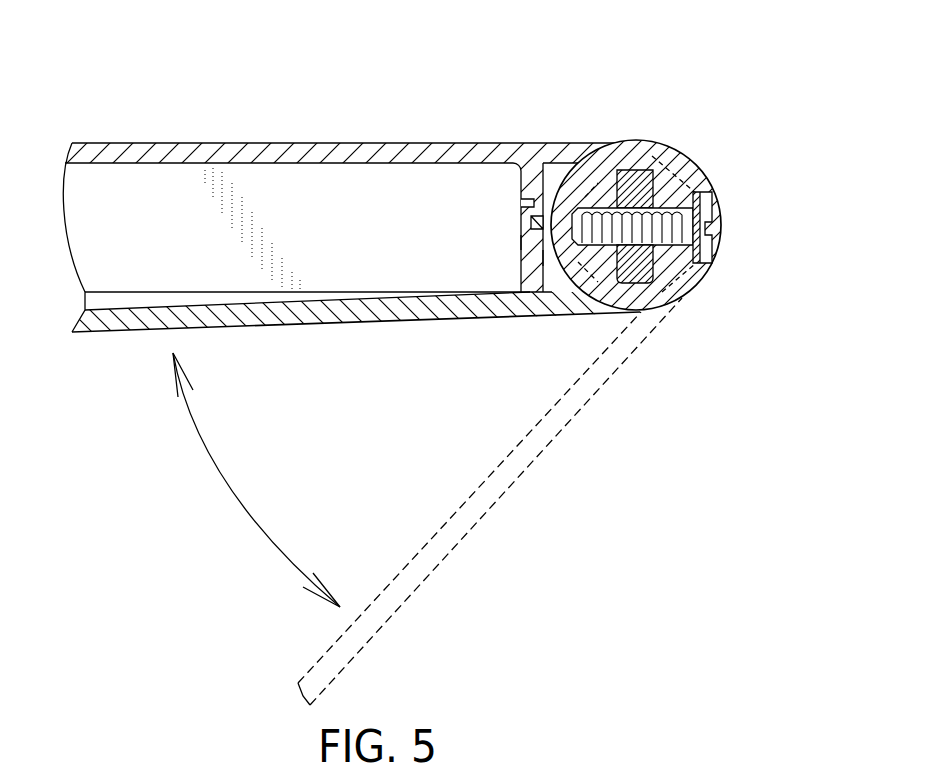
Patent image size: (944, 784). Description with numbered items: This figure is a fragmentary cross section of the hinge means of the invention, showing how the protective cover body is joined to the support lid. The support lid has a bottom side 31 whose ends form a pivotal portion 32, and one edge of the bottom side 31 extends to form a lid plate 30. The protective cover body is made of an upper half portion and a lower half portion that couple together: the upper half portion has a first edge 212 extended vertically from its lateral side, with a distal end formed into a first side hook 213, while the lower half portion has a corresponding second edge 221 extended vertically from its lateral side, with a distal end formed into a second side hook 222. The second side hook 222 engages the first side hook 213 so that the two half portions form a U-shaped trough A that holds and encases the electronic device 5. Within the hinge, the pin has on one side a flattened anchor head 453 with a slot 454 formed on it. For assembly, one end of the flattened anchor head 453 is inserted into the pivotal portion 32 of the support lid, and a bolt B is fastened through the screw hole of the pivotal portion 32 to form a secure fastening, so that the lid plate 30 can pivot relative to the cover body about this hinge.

The electronic device 5 is at (327, 188).
The lid plate 30 is at (137, 322).
The bottom side 31 is at (618, 157).
The pivotal portion 32 is at (707, 292).
The first edge 212 is at (537, 185).
The first side hook 213 is at (521, 225).
The second edge 221 is at (541, 258).
The second side hook 222 is at (520, 208).
The flattened anchor head 453 is at (636, 278).
The slot 454 is at (651, 250).
The U-shaped trough A is at (520, 244).
The bolt B is at (668, 200).